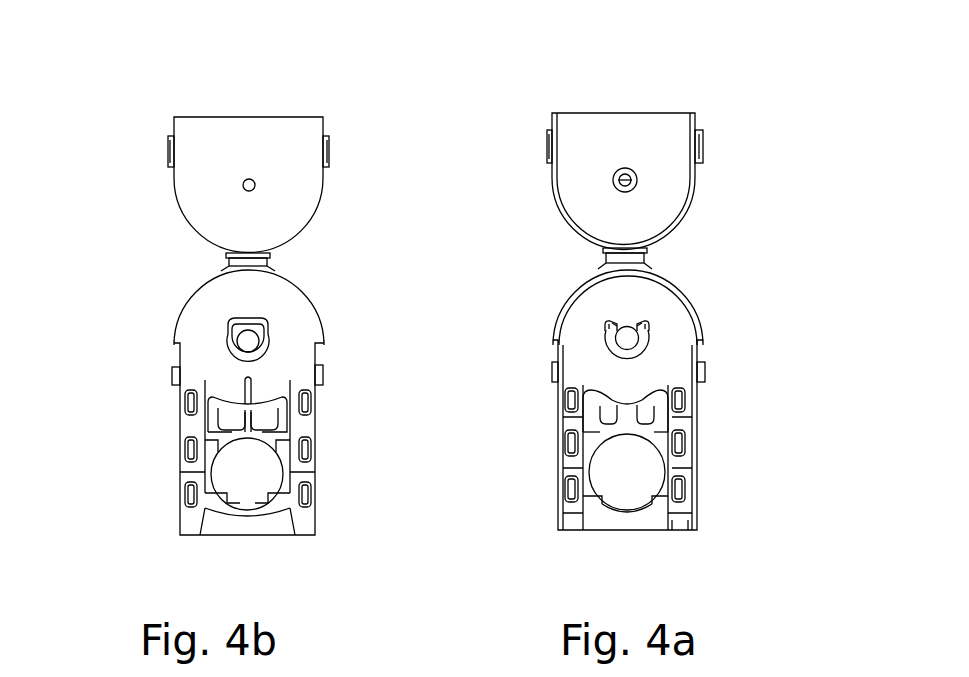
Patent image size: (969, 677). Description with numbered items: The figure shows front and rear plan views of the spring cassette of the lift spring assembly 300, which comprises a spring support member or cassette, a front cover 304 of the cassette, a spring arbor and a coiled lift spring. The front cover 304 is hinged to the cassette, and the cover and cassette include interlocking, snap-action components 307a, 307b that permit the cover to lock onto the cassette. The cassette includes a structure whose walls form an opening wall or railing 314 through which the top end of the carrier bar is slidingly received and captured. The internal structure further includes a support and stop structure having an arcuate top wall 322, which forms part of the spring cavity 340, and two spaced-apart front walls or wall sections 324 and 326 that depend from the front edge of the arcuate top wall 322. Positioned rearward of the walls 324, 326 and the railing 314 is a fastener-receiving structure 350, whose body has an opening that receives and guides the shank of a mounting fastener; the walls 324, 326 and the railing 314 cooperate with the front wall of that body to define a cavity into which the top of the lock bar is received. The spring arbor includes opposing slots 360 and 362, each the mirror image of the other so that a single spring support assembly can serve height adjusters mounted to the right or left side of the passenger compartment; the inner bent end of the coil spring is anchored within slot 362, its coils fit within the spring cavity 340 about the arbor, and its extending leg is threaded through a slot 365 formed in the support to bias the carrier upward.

In FIG. 4B, the lift spring assembly 300 is at (163, 355).
In FIG. 4A, the lift spring assembly 300 is at (707, 435).
In FIG. 4B, the front cover 304 is at (207, 190).
In FIG. 4A, the front cover 304 is at (702, 178).
In FIG. 4B, the snap-action component 307a is at (173, 385).
In FIG. 4B, the snap-action component 307b is at (168, 155).
In FIG. 4A, the opening wall or railing 314 is at (673, 395).
In FIG. 4A, the arcuate top wall 322 is at (640, 395).
In FIG. 4A, the front wall section 324 is at (597, 408).
In FIG. 4A, the front wall section 326 is at (660, 412).
In FIG. 4A, the spring cavity 340 is at (640, 298).
In FIG. 4B, the fastener-receiving structure 350 is at (218, 500).
In FIG. 4A, the slot 360 is at (606, 337).
In FIG. 4A, the slot 362 is at (647, 327).
In FIG. 4A, the slot 365 is at (680, 523).